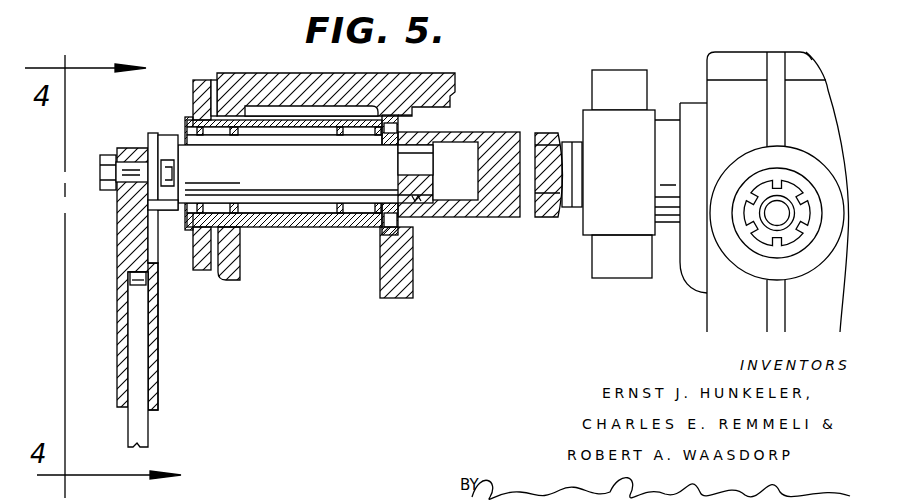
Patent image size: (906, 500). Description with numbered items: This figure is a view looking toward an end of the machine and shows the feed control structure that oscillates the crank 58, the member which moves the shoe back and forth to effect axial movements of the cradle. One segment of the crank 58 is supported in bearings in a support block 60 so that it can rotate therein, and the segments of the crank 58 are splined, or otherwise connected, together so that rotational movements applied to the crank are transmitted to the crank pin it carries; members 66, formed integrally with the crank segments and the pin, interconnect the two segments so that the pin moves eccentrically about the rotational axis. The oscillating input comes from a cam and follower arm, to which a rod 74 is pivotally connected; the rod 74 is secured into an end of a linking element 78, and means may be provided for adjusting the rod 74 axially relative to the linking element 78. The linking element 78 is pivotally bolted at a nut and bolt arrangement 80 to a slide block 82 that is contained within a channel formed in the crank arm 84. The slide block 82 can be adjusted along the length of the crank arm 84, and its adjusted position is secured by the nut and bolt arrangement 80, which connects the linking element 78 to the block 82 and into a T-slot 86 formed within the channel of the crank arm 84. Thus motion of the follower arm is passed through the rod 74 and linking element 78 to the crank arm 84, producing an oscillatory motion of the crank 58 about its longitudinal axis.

The crank member 58 is at (300, 180).
The support block 60 is at (611, 245).
The members 66 is at (667, 236).
The rod 74 is at (138, 393).
The linking element 78 is at (154, 333).
The nut and bolt arrangement 80 is at (127, 187).
The slide block 82 is at (153, 152).
The crank arm 84 is at (169, 201).
The T-slot 86 is at (178, 162).